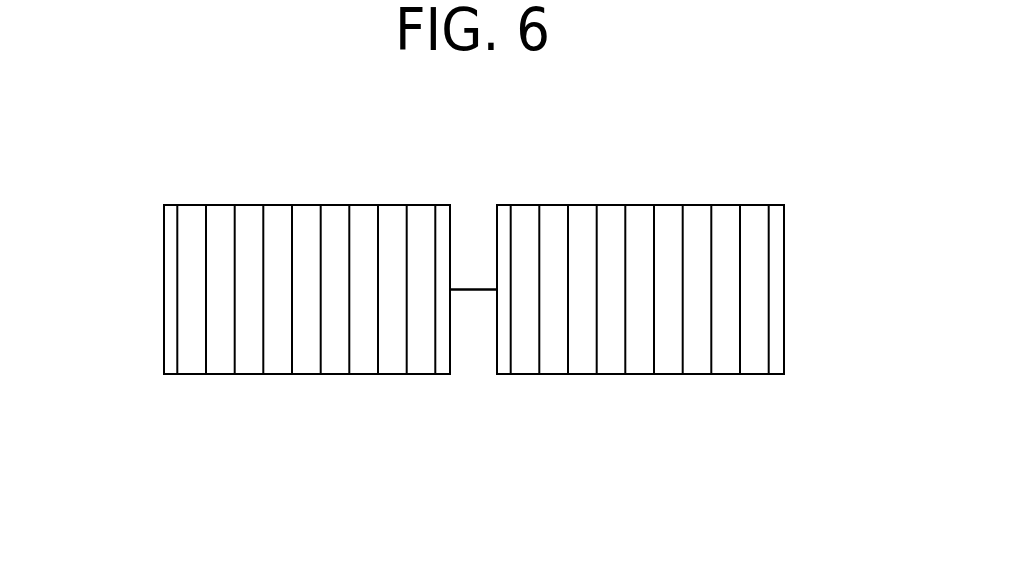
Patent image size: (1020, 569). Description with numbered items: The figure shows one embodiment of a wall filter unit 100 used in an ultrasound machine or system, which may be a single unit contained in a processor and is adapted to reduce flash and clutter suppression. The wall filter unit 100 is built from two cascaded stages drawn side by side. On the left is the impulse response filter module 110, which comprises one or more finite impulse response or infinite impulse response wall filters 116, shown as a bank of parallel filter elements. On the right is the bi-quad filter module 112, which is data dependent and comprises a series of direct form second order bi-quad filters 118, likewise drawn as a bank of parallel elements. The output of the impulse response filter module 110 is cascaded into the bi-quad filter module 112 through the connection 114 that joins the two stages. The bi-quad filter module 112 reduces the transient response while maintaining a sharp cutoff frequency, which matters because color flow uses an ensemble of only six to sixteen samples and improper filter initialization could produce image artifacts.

The wall filter unit 100 is at (593, 171).
The impulse response filter module 110 is at (164, 290).
The bi-quad filter module 112 is at (784, 287).
The connection 114 is at (472, 288).
The wall filters 116 is at (377, 374).
The bi-quad filters 118 is at (712, 374).